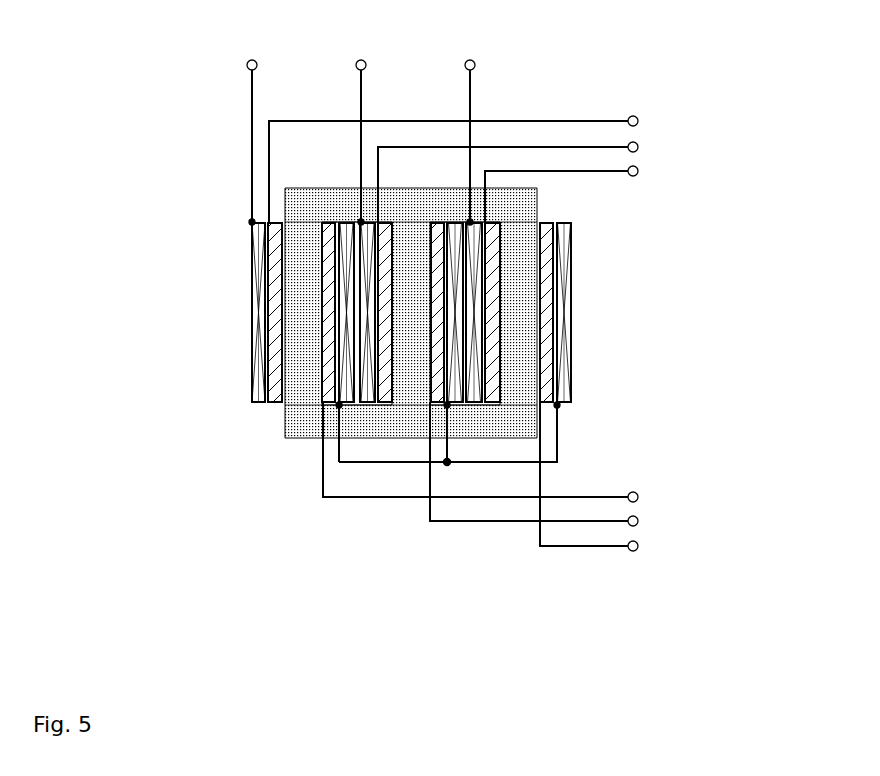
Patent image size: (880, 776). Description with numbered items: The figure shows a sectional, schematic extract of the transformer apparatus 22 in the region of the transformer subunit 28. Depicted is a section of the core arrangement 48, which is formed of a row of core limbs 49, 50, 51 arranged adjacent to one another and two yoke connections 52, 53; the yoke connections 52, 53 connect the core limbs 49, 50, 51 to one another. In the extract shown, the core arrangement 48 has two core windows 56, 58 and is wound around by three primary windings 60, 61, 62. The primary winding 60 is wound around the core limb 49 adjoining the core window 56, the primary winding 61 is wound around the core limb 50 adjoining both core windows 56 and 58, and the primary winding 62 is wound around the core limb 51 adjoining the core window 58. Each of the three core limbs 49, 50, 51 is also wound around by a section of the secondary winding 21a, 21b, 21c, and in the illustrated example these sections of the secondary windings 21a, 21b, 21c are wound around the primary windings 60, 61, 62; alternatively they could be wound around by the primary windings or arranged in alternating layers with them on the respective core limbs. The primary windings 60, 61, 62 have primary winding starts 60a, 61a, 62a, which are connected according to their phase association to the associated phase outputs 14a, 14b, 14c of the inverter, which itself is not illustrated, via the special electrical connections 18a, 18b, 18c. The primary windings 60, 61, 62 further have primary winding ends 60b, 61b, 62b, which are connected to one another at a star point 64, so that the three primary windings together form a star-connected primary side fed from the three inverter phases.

The phase output 14a is at (247, 58).
The phase output 14b is at (357, 58).
The phase output 14c is at (466, 58).
The electrical connection 18a is at (250, 102).
The electrical connection 18b is at (358, 90).
The electrical connection 18c is at (468, 93).
The secondary winding 21a is at (592, 119).
The secondary winding 21b is at (565, 145).
The secondary winding 21c is at (597, 172).
The transformer apparatus 22 is at (752, 127).
The transformer subunit 28 is at (713, 215).
The core arrangement 48 is at (527, 202).
The core limb 49 is at (297, 272).
The core limb 50 is at (408, 303).
The core limb 51 is at (527, 285).
The yoke connection 52 is at (298, 202).
The yoke connection 53 is at (300, 423).
The core window 56 is at (353, 400).
The core window 58 is at (468, 400).
The primary winding 60 is at (258, 357).
The primary winding start 60a is at (249, 222).
The primary winding end 60b is at (338, 406).
The primary winding 61 is at (367, 330).
The primary winding start 61a is at (360, 220).
The primary winding end 61b is at (446, 407).
The primary winding 62 is at (565, 342).
The primary winding start 62a is at (469, 220).
The primary winding end 62b is at (559, 407).
The star point 64 is at (446, 465).